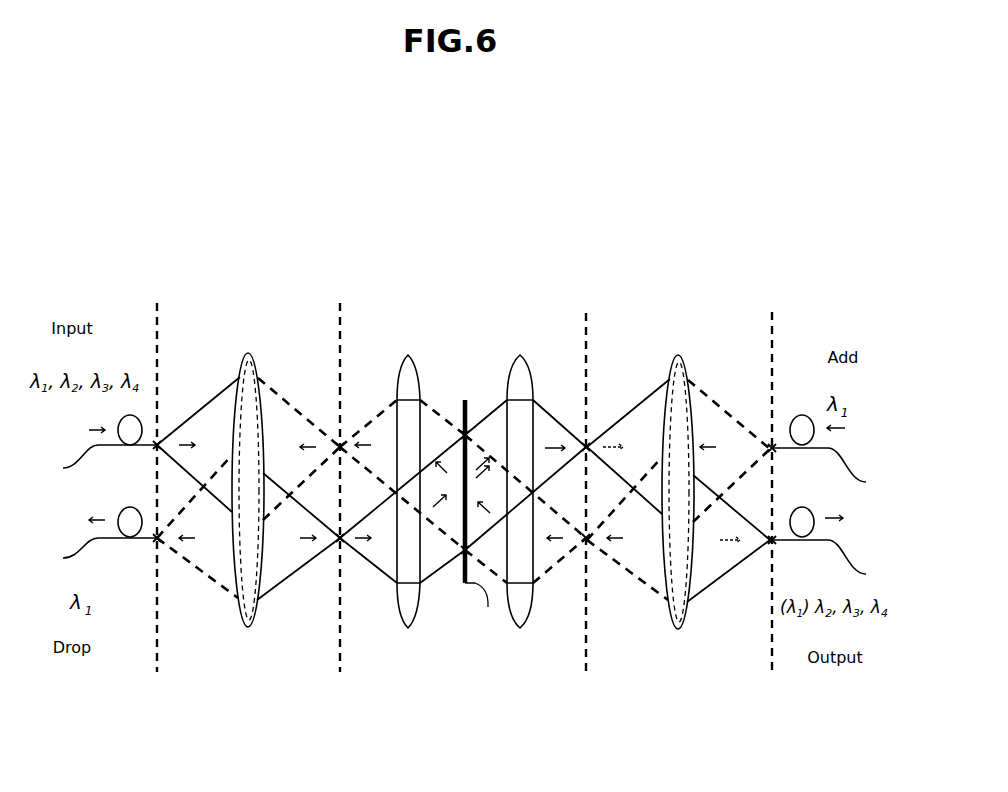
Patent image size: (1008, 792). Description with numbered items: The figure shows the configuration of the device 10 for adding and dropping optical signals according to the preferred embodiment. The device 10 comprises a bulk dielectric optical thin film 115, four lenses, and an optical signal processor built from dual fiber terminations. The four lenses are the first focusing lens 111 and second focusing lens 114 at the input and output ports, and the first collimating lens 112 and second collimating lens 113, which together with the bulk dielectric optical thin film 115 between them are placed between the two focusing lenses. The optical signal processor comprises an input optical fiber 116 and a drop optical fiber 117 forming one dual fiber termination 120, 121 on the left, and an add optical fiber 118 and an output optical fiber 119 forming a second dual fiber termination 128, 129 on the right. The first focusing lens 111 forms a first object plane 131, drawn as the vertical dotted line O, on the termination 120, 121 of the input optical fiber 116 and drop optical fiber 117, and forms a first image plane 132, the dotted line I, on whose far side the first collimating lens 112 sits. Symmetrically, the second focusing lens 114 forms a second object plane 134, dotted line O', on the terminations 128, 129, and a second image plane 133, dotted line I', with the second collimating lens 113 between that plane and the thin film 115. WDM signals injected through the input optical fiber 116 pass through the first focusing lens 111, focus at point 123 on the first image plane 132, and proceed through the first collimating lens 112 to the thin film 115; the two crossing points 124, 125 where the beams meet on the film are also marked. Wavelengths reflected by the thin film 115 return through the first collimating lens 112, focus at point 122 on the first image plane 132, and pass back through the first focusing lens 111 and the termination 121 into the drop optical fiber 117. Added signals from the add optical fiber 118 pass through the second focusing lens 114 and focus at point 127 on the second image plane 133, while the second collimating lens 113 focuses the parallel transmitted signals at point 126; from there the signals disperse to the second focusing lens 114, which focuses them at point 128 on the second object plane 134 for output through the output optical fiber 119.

The device for adding and dropping optical signals 10 is at (442, 232).
The first focusing lens 111 is at (250, 353).
The first collimating lens 112 is at (408, 353).
The second collimating lens 113 is at (520, 353).
The second focusing lens 114 is at (680, 355).
The bulk dielectric optical thin film 115 is at (488, 607).
The input optical fiber 116 is at (93, 446).
The drop optical fiber 117 is at (93, 537).
The add optical fiber 118 is at (835, 456).
The output optical fiber 119 is at (835, 547).
The dual fiber termination of input optical fiber 120 is at (158, 444).
The termination of drop optical fiber 121 is at (158, 540).
The focus point on first image plane 122 is at (342, 445).
The focus point on first image plane 123 is at (341, 541).
The upper beam crossing point on filter 124 is at (466, 434).
The lower beam crossing point on filter 125 is at (465, 551).
The focus point on second image plane 126 is at (588, 446).
The focus point on second image plane 127 is at (588, 541).
The termination of output optical fiber 128 is at (771, 545).
The termination of add optical fiber 129 is at (770, 434).
The first object plane 131 is at (158, 330).
The first image plane 132 is at (341, 328).
The second image plane 133 is at (587, 330).
The second object plane 134 is at (774, 333).